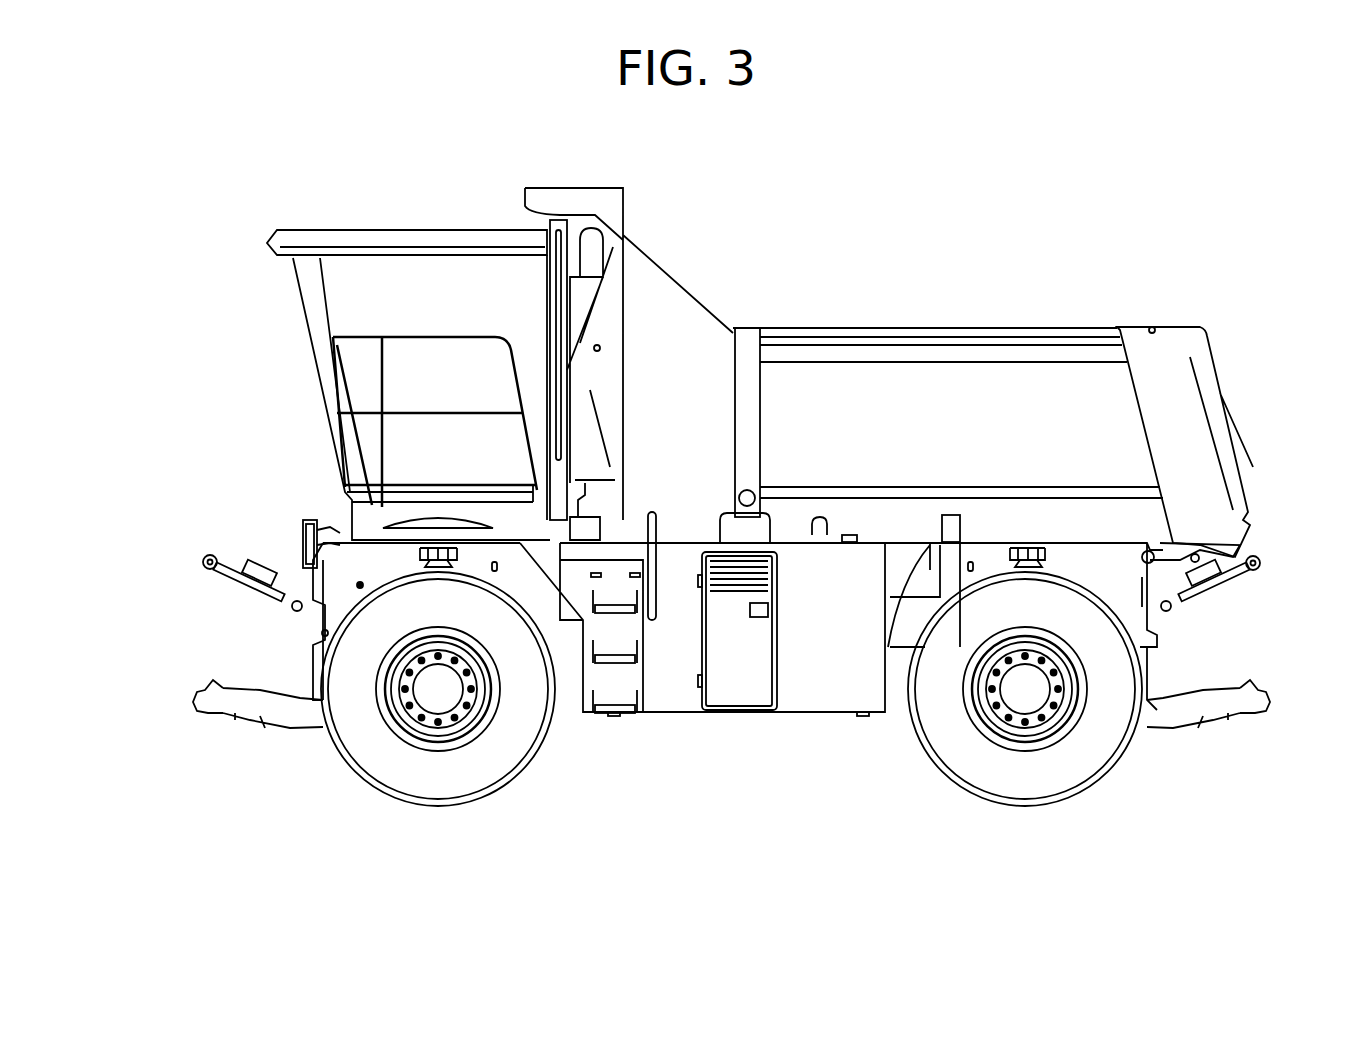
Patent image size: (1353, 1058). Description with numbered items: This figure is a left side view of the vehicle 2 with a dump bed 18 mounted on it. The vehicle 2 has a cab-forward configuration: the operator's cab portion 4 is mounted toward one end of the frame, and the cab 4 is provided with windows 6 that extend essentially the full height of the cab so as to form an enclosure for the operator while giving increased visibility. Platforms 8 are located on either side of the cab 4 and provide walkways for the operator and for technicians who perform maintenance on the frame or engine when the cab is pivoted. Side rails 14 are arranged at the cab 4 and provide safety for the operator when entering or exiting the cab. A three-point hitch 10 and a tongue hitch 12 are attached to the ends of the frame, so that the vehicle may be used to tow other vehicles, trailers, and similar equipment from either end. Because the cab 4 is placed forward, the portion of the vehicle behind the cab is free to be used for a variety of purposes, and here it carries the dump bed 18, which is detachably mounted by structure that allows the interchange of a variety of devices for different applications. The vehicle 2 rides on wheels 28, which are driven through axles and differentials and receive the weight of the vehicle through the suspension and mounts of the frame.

The vehicle 2 is at (857, 277).
The operator's cab portion 4 is at (268, 308).
The windows 6 is at (370, 306).
The platforms 8 is at (370, 500).
The three-point hitch 10 is at (253, 703).
The tongue hitch 12 is at (248, 723).
The side rails 14 is at (437, 336).
The dump bed 18 is at (906, 448).
The wheels 28 is at (393, 767).